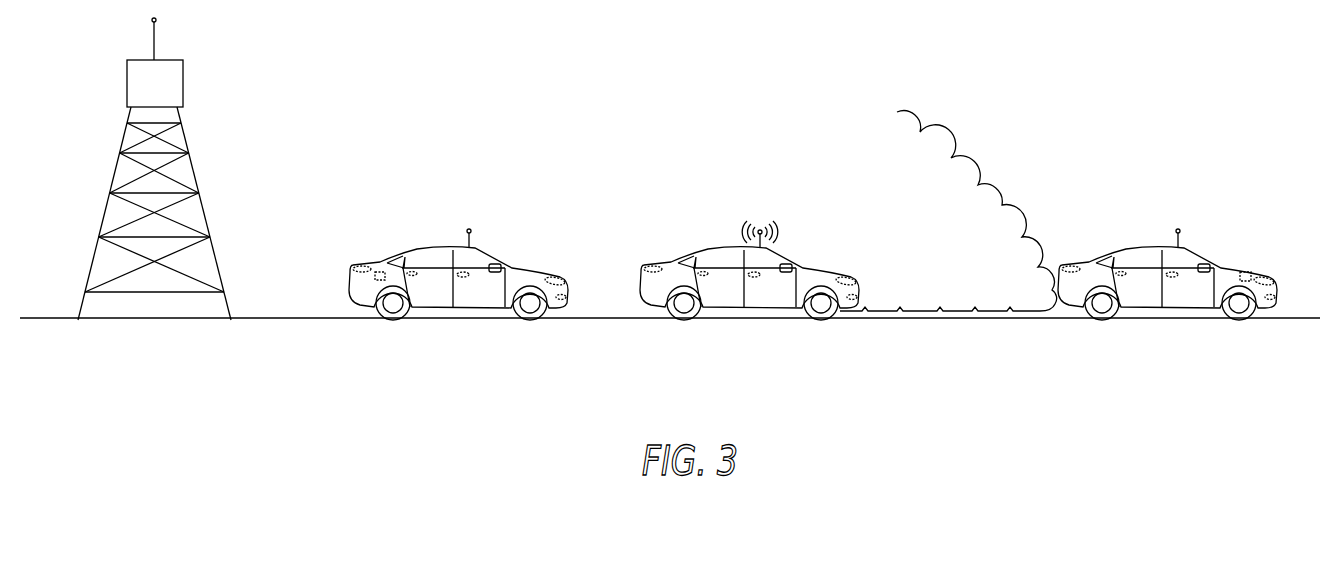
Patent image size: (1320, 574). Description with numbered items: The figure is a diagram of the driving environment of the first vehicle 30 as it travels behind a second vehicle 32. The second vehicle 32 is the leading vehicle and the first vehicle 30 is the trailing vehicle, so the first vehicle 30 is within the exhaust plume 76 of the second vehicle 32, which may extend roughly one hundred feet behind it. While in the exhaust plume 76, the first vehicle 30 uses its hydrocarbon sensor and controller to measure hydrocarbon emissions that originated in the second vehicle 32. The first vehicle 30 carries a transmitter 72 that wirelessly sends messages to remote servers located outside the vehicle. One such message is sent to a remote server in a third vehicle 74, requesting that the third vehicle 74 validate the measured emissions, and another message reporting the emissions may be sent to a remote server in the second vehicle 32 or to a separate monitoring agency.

The first vehicle 30 is at (825, 266).
The second vehicle 32 is at (1231, 265).
The transmitter 72 is at (759, 226).
The third vehicle 74 is at (523, 266).
The exhaust plume 76 is at (971, 158).